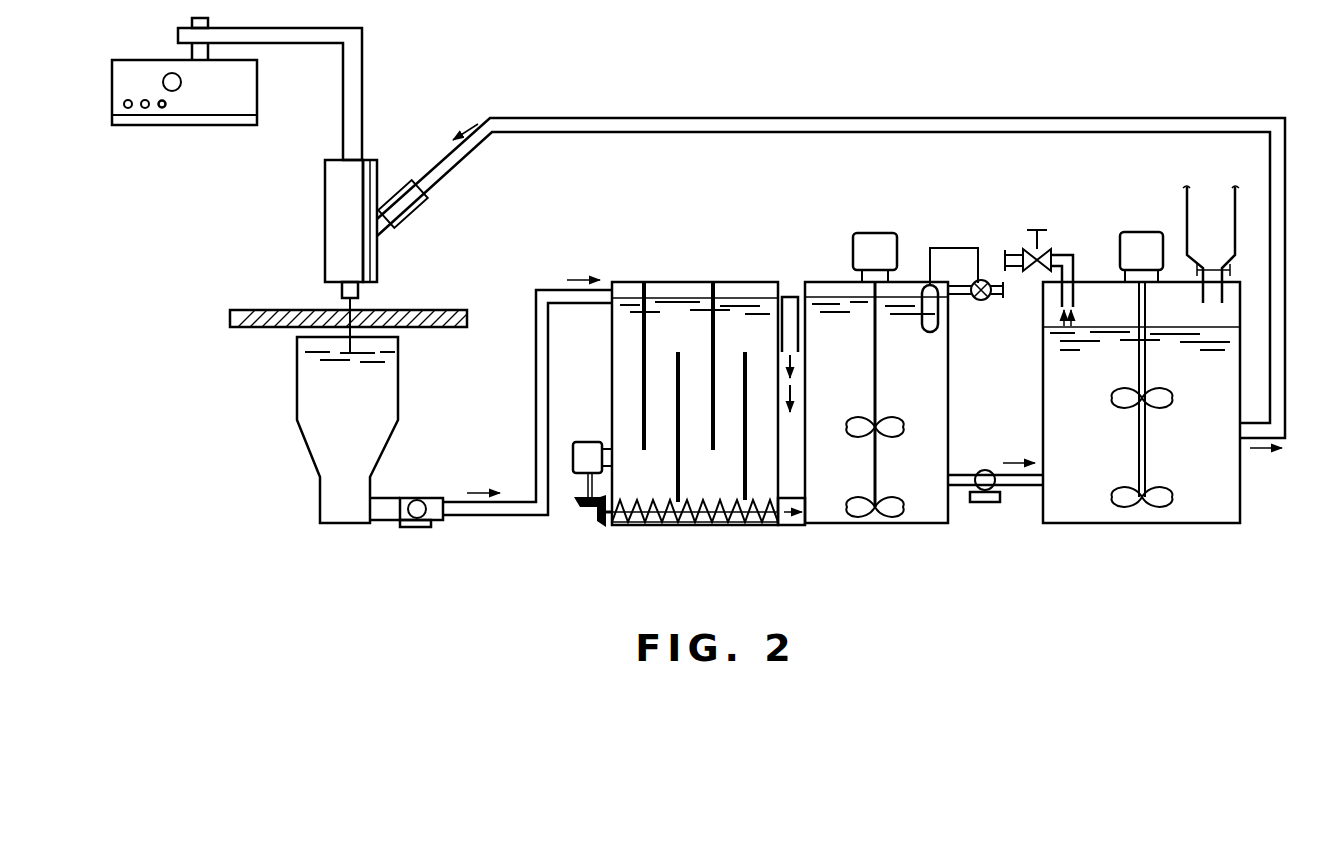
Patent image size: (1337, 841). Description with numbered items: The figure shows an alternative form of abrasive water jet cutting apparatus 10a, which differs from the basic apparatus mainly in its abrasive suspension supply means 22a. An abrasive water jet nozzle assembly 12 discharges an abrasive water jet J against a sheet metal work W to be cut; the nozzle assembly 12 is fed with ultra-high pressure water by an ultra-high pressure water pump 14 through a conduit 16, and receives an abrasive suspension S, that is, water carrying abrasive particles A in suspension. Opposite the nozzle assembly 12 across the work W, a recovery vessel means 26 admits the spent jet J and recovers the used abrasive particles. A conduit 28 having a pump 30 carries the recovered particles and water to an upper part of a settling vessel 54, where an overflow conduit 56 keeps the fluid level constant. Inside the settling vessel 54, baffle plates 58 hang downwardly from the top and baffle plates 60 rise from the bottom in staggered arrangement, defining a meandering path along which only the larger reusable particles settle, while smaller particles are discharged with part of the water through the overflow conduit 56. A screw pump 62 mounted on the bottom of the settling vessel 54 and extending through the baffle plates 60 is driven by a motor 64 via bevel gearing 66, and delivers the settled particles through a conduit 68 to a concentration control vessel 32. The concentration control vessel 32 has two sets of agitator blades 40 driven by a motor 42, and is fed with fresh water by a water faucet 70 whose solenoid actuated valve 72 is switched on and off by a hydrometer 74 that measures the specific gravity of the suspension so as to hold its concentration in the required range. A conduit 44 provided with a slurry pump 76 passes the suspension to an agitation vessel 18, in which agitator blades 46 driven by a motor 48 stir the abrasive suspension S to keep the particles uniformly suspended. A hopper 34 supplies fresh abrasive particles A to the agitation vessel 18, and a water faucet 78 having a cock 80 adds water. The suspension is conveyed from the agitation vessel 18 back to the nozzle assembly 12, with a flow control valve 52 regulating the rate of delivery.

The abrasive water jet cutting apparatus 10a is at (828, 106).
The abrasive water jet nozzle assembly 12 is at (325, 213).
The ultra-high pressure water pump 14 is at (173, 127).
The conduit 16 is at (366, 70).
The agitation vessel 18 is at (1070, 525).
The abrasive suspension supply means 22a is at (1179, 533).
The recovery vessel means 26 is at (297, 413).
The conduit 28 is at (491, 403).
The pump 30 is at (418, 499).
The concentration control vessel 32 is at (870, 524).
The hopper 34 is at (1186, 190).
The agitator blades 40 is at (897, 422).
The motor 42 is at (875, 232).
The conduit 44 is at (995, 485).
The agitator blades 46 is at (1113, 394).
The motor 48 is at (1140, 230).
The flow control valve 52 is at (663, 134).
The settling vessel 54 is at (678, 282).
The overflow conduit 56 is at (788, 297).
The baffle plates 58 is at (642, 320).
The baffle plates 60 is at (677, 448).
The screw pump 62 is at (695, 526).
The motor 64 is at (590, 440).
The bevel gearing 66 is at (594, 522).
The conduit 68 is at (793, 527).
The water faucet 70 is at (993, 281).
The solenoid actuated valve 72 is at (982, 302).
The hydrometer 74 is at (923, 283).
The slurry pump 76 is at (985, 471).
The water faucet 78 is at (1065, 253).
The cock 80 is at (1033, 230).
The sheet metal work W is at (278, 309).
The abrasive water jet J is at (357, 306).
The abrasive particles A is at (1220, 197).
The abrasive suspension S is at (1257, 493).